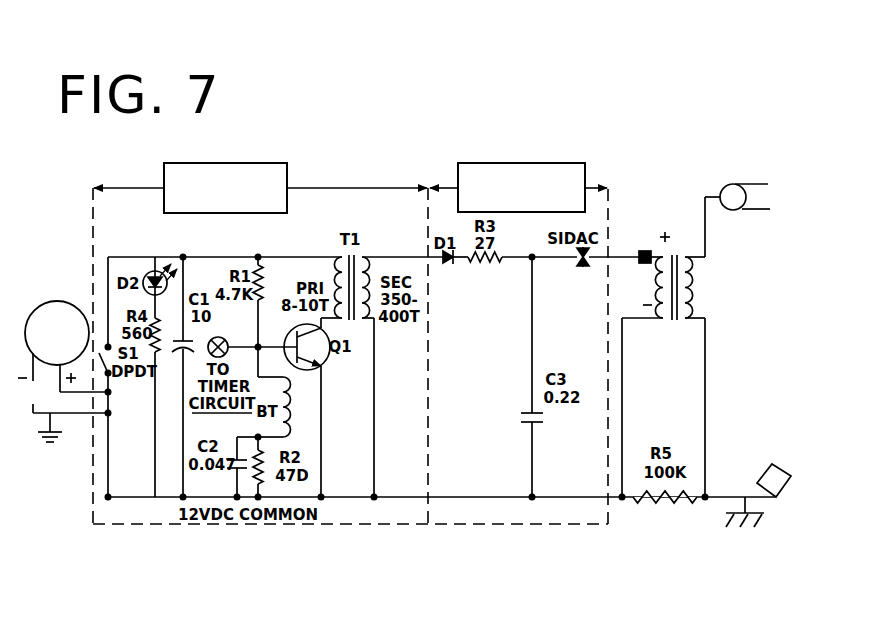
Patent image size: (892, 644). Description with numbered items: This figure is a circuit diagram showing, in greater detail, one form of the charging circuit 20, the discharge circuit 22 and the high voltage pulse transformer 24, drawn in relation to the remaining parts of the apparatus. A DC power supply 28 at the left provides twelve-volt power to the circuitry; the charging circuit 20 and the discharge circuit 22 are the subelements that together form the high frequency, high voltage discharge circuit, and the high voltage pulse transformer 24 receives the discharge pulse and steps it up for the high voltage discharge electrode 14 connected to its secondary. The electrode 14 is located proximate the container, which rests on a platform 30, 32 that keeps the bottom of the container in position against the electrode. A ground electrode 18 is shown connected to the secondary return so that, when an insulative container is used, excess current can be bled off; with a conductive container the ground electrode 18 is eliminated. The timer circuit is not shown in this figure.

The DC power supply 28 is at (52, 301).
The charging circuit 20 is at (264, 155).
The discharge circuit 22 is at (470, 160).
The high voltage pulse transformer 24 is at (658, 190).
The high voltage discharge electrode 14 is at (753, 212).
The platform 30 is at (769, 454).
The platform 32 is at (787, 480).
The ground electrode 18 is at (763, 499).